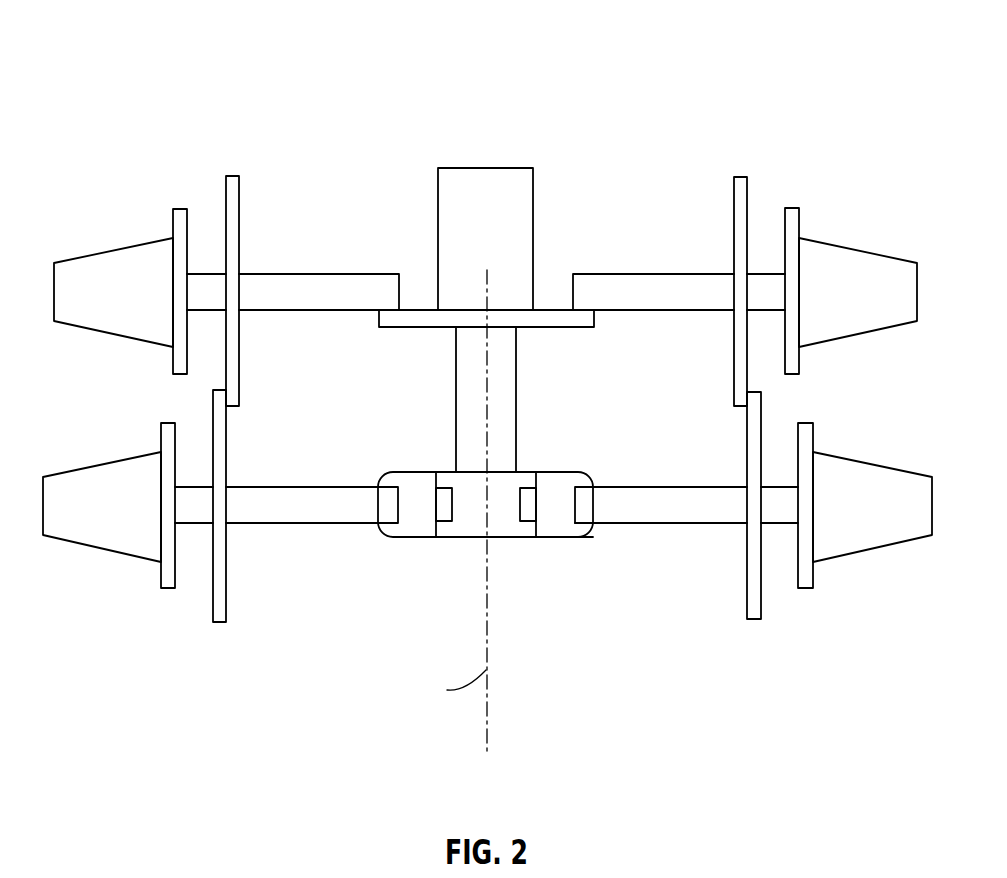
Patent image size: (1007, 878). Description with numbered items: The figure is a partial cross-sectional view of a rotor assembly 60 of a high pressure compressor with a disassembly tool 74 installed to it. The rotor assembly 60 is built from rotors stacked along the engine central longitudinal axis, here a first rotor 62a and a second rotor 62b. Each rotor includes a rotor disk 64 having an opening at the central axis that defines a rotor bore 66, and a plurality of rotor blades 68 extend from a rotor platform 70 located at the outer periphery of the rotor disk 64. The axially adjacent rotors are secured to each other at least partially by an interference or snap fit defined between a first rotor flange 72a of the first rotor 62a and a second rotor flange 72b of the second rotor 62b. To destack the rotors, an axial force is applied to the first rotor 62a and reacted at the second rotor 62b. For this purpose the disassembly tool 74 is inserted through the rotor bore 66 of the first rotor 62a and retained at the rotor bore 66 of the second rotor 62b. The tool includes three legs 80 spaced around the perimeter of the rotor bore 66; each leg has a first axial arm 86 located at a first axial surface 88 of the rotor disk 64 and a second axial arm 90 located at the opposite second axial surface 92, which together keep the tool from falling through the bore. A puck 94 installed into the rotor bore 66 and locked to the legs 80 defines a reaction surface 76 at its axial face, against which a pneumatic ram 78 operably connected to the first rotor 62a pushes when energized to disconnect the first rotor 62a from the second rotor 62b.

The rotor assembly 60 is at (178, 52).
The first rotor 62a is at (365, 272).
The second rotor 62b is at (305, 525).
The rotor disk 64 is at (640, 275).
The rotor bore 66 is at (554, 285).
The rotor blades 68 is at (858, 262).
The rotor platform 70 is at (793, 205).
The first rotor flange 72a is at (741, 178).
The second rotor flange 72b is at (755, 620).
The disassembly tool 74 is at (548, 668).
The reaction surface 76 is at (500, 470).
The pneumatic ram 78 is at (486, 186).
The legs 80 is at (413, 520).
The first axial arm 86 is at (570, 483).
The first axial surface 88 is at (655, 487).
The second axial arm 90 is at (575, 540).
The second axial surface 92 is at (640, 525).
The puck 94 is at (465, 498).